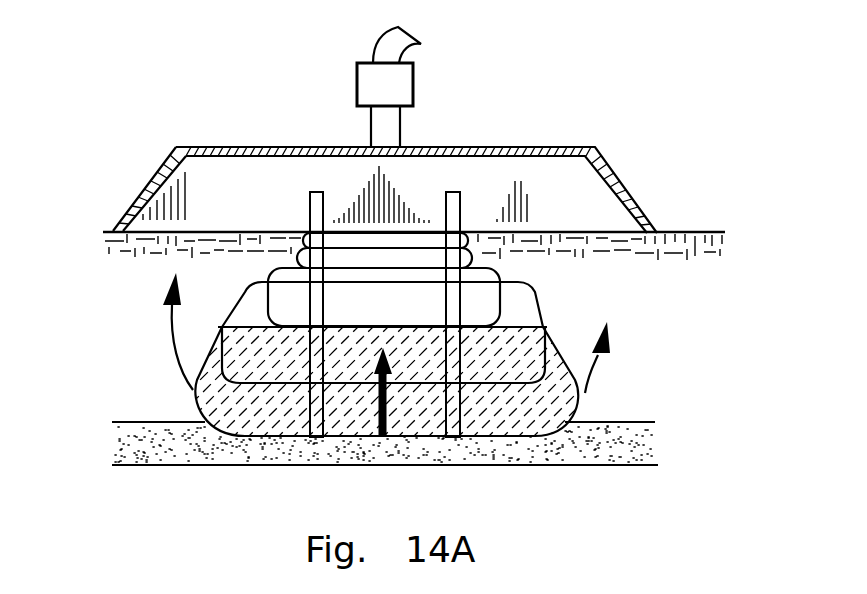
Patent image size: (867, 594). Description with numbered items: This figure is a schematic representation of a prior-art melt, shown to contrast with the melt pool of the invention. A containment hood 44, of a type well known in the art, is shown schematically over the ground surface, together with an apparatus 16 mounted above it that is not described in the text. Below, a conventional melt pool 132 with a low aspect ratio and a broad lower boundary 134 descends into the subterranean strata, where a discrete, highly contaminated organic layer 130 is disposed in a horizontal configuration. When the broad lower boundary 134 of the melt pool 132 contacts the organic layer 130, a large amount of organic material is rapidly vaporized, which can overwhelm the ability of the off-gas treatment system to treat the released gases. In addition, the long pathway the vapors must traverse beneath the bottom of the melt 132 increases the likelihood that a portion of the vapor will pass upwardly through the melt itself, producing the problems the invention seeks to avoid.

The vacuum blower unit 16 is at (413, 88).
The containment hood 44 is at (543, 148).
The highly contaminated organic layer 130 is at (603, 455).
The conventional melt pool 132 is at (507, 358).
The broad lower boundary 134 is at (505, 413).